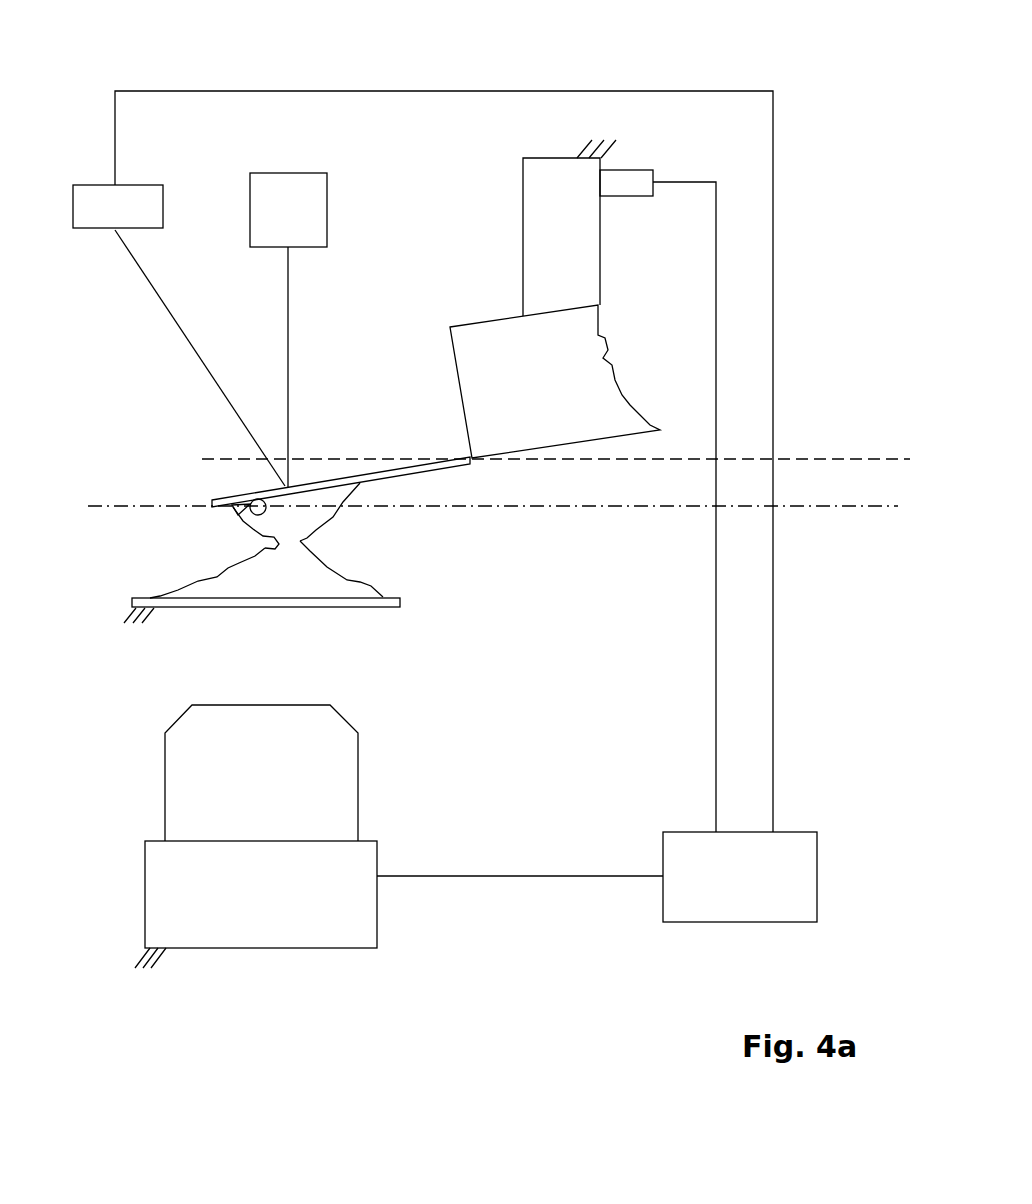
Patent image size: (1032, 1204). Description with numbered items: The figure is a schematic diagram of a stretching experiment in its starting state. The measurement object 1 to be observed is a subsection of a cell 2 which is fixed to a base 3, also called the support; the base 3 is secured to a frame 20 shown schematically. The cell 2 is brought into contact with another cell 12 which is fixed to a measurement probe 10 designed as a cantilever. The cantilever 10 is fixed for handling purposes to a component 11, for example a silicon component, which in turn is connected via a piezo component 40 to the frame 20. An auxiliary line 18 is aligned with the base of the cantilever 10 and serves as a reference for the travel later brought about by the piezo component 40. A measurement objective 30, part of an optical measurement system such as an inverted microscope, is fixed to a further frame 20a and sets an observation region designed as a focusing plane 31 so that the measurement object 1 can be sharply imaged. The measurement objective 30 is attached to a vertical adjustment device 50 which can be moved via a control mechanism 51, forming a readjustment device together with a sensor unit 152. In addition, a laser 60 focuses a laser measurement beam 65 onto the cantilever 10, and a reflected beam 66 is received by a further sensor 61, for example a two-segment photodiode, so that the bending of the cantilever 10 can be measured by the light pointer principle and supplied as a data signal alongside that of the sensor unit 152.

The measurement object 1 is at (243, 523).
The cell 2 is at (320, 577).
The base 3 is at (400, 603).
The measurement probe 10 is at (248, 490).
The component 11 is at (607, 363).
The another cell 12 is at (320, 520).
The auxiliary line 18 is at (815, 457).
The frame 20 is at (605, 140).
The further frame 20a is at (157, 953).
The measurement objective 30 is at (358, 780).
The focusing plane 31 is at (843, 510).
The piezo component 40 is at (585, 263).
The adjustment device 50 is at (360, 923).
The control mechanism 51 is at (790, 878).
The laser 60 is at (290, 197).
The further sensor 61 is at (83, 197).
The laser measurement beam 65 is at (292, 320).
The reflected beam 66 is at (172, 317).
The sensor unit 152 is at (640, 178).